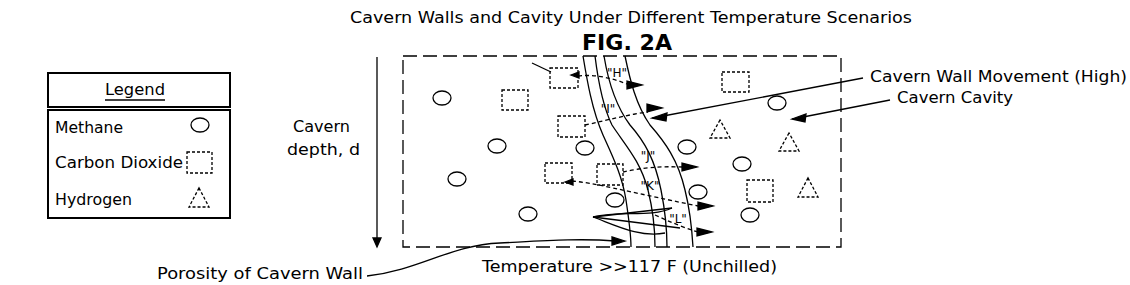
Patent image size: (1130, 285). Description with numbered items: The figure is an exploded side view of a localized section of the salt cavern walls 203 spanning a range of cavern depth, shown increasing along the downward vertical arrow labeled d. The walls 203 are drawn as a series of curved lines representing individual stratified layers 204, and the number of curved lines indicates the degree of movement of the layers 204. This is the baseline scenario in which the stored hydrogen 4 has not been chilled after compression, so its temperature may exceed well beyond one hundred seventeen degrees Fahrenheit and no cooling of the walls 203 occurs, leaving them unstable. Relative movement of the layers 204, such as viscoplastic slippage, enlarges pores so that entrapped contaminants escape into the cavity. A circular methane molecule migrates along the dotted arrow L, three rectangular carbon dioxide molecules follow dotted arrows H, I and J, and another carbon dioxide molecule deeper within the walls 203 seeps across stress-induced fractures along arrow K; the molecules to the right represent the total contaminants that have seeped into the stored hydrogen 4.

The stored hydrogen 4 is at (812, 80).
The salt cavern walls 203 is at (641, 99).
The layers 204 is at (620, 220).